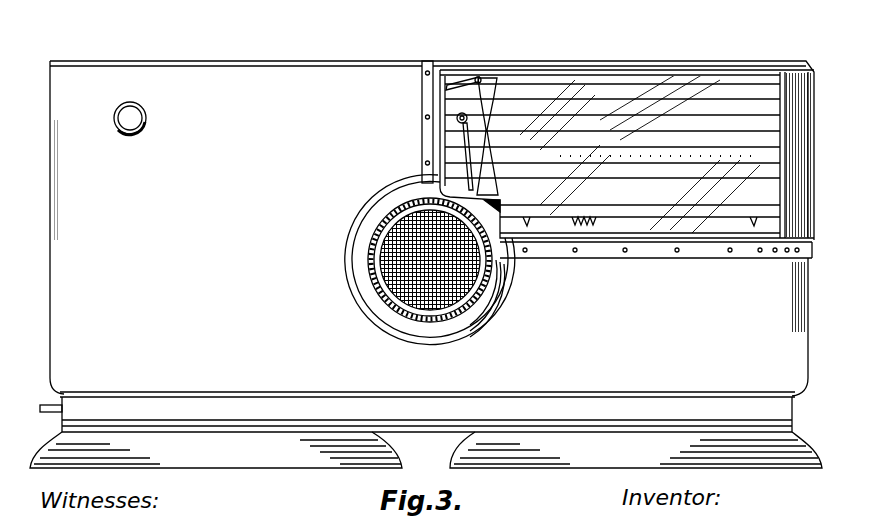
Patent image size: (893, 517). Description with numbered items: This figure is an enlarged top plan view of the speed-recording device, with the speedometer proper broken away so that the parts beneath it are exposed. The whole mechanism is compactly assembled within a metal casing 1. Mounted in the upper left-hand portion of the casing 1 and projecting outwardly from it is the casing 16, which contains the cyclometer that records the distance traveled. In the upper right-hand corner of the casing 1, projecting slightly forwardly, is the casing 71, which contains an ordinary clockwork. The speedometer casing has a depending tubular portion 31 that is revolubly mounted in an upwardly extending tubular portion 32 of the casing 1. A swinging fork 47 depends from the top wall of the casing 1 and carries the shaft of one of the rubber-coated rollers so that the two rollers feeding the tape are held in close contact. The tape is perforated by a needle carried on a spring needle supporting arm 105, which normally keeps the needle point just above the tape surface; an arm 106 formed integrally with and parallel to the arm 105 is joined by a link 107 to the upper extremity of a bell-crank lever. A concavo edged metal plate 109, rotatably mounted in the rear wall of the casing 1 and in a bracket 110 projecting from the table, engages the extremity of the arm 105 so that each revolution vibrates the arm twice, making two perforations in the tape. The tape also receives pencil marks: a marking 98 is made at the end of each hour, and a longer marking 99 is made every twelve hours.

The casing 1 is at (300, 74).
The swinging fork 47 is at (137, 121).
The cyclometer casing 16 is at (285, 446).
The clockwork casing 71 is at (565, 452).
The depending tubular portion 31 is at (472, 290).
The upwardly extending tubular portion 32 is at (482, 313).
The spring needle supporting arm 105 is at (452, 84).
The arm 106 is at (457, 119).
The link 107 is at (465, 140).
The concavo edged metal plate 109 is at (495, 85).
The bracket 110 is at (502, 206).
The longer marking 99 is at (537, 224).
The marking 98 is at (594, 226).